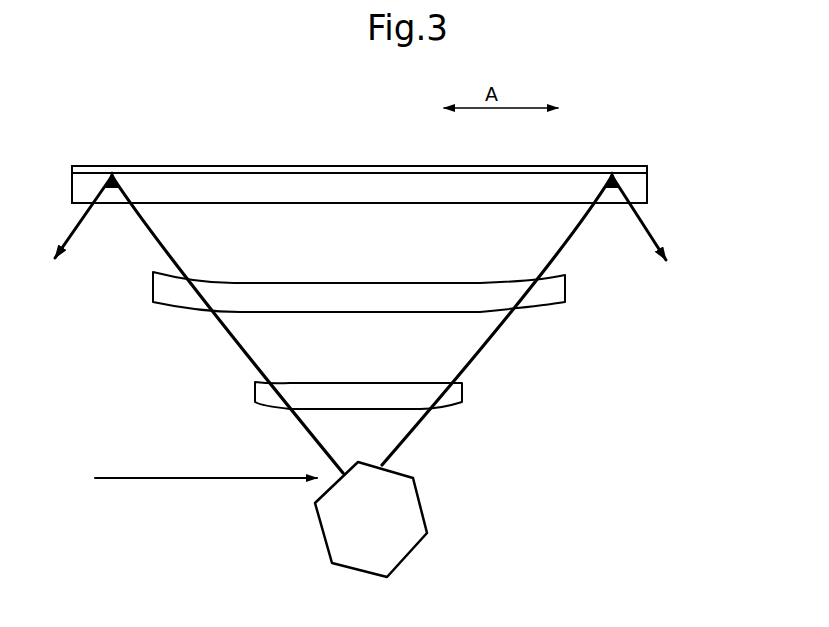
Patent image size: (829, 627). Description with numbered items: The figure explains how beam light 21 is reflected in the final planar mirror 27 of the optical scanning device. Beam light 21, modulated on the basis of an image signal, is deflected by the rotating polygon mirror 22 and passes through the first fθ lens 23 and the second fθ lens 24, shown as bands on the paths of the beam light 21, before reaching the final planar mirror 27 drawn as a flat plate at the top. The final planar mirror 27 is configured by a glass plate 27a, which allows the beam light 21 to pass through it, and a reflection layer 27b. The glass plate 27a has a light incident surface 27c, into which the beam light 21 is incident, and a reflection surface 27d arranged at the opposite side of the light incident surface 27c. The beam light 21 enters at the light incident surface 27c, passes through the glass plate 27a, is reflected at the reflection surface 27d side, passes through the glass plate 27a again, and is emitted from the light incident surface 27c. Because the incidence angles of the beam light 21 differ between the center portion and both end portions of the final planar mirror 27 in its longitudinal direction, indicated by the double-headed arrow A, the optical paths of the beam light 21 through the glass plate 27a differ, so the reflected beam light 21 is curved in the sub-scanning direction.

The beam light 21 is at (573, 243).
The polygon mirror 22 is at (410, 522).
The first fθ lens 23 is at (462, 392).
The second fθ lens 24 is at (565, 288).
The final planar mirror 27 is at (432, 193).
The glass plate 27a is at (638, 192).
The reflection layer 27b is at (647, 172).
The light incident surface 27c is at (283, 204).
The reflection surface 27d is at (283, 168).